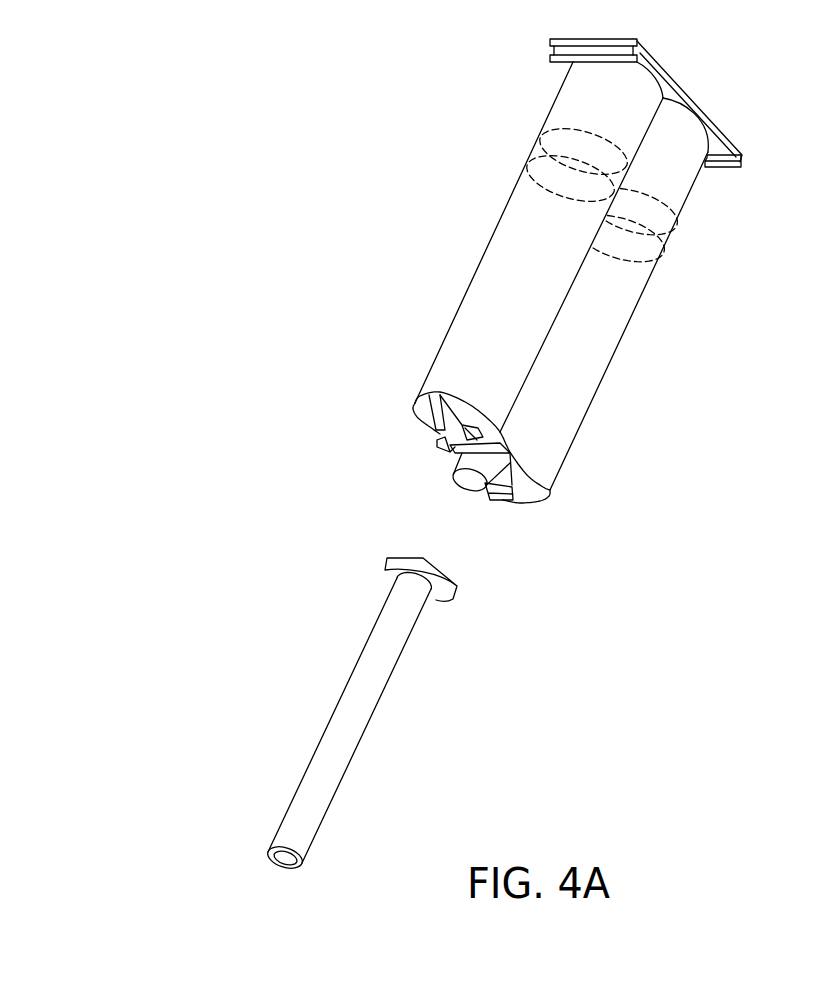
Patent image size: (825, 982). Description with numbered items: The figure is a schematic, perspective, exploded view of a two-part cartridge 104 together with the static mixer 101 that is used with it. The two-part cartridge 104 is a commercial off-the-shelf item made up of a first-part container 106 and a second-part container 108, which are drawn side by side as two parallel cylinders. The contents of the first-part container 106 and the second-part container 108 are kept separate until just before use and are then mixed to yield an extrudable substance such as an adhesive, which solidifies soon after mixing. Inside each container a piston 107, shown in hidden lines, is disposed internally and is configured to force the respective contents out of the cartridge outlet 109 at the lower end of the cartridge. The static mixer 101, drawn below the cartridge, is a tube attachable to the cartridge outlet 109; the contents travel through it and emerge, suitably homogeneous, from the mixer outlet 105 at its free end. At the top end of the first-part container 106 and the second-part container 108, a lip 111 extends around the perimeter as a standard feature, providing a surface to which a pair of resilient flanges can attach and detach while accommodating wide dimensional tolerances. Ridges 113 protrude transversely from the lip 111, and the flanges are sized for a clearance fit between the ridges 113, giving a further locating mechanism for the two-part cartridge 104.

The static mixer 101 is at (327, 727).
The two-part cartridge 104 is at (478, 263).
The mixer outlet 105 is at (260, 858).
The first-part container 106 is at (439, 345).
The piston 107 is at (542, 137).
The second-part container 108 is at (581, 422).
The cartridge outlet 109 is at (445, 478).
The lip 111 is at (655, 65).
The ridges 113 is at (550, 53).